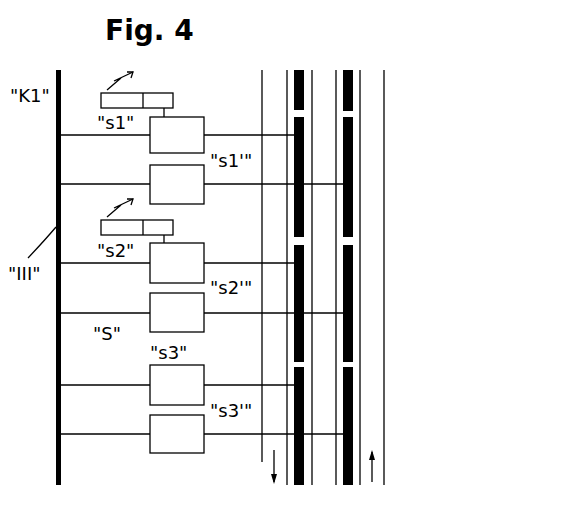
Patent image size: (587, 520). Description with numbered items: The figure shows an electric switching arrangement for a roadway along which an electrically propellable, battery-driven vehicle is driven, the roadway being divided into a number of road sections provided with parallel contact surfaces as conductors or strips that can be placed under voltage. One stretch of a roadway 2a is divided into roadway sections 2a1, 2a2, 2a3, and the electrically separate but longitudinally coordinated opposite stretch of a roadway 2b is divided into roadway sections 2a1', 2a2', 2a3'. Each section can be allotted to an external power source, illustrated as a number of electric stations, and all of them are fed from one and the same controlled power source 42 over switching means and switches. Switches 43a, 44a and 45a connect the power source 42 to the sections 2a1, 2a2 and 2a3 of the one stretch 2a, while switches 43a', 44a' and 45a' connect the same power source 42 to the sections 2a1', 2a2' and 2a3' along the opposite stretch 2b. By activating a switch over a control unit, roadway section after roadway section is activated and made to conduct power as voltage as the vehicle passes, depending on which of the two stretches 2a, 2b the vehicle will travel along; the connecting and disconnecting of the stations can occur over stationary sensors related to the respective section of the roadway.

The stretch of a roadway 2a is at (300, 70).
The opposite stretch of a roadway 2b is at (358, 92).
The roadway section 2a1 is at (258, 162).
The roadway section 2a2 is at (258, 288).
The roadway section 2a3 is at (258, 413).
The roadway section 2a1' is at (398, 177).
The roadway section 2a2' is at (397, 303).
The roadway section 2a3' is at (396, 426).
The controlled power source 42 is at (56, 202).
The switch 43a is at (177, 139).
The switch 43a' is at (202, 184).
The switch 44a is at (177, 265).
The switch 44a' is at (202, 309).
The switch 45a is at (177, 380).
The switch 45a' is at (202, 429).